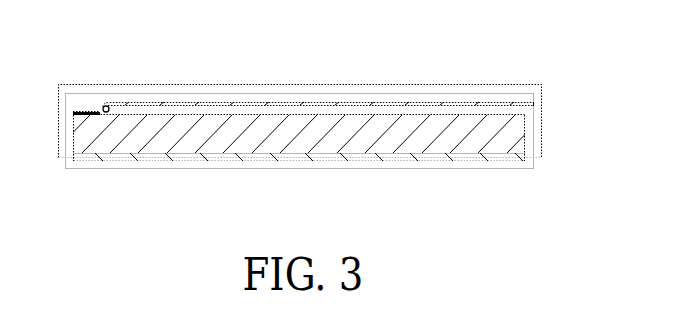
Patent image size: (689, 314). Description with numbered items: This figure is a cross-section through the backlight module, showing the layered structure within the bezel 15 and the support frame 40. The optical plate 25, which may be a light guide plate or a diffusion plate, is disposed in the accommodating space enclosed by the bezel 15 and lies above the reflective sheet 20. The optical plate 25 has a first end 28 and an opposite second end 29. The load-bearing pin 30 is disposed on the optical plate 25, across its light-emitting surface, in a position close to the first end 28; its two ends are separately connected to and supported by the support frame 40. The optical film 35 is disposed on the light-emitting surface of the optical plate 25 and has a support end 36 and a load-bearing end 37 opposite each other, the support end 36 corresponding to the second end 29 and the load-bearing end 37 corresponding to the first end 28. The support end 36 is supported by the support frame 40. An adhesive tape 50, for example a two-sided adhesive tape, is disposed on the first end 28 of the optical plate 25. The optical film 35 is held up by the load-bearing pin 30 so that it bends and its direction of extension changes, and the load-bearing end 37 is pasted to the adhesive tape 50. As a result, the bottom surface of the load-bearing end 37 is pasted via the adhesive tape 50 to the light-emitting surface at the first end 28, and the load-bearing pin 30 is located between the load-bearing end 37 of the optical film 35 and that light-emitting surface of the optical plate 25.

The bezel 15 is at (422, 168).
The reflective sheet 20 is at (355, 161).
The optical plate 25 is at (298, 146).
The first end 28 is at (73, 141).
The second end 29 is at (525, 133).
The load-bearing pin 30 is at (105, 106).
The optical film 35 is at (227, 102).
The support end 36 is at (533, 104).
The load-bearing end 37 is at (72, 112).
The support frame 40 is at (518, 84).
The adhesive tape 50 is at (72, 113).